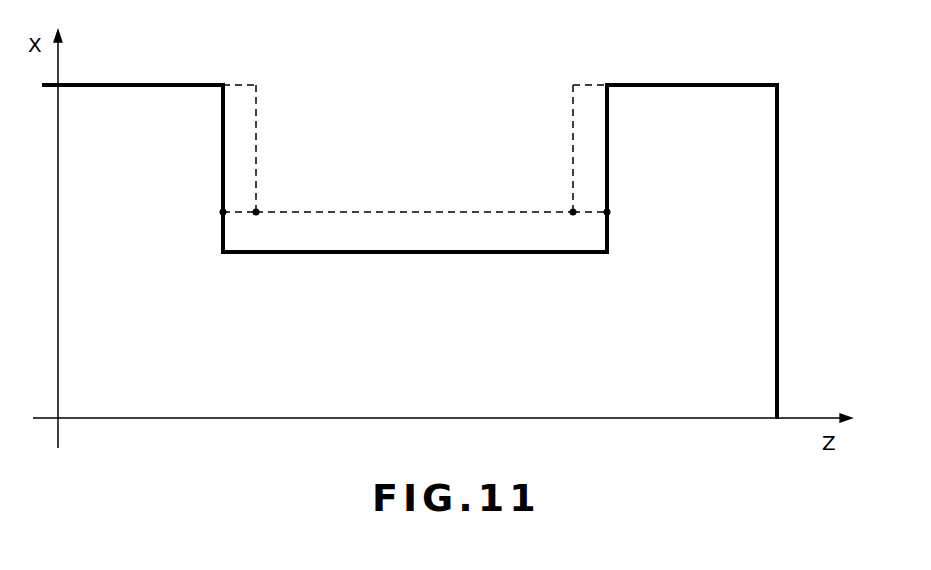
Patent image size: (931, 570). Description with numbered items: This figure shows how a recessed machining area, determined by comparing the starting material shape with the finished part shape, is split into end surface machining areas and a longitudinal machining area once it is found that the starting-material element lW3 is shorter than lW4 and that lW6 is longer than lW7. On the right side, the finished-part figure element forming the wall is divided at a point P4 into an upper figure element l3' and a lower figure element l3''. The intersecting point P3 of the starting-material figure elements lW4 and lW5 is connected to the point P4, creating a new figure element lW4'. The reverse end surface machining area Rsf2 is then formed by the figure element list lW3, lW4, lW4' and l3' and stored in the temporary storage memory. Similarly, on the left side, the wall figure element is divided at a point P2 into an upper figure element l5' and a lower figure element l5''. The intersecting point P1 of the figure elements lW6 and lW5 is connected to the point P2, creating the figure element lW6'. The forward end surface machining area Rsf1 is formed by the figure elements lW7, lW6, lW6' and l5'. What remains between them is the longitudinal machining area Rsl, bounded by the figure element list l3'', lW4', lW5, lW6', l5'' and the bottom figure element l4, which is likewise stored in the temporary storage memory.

The figure element l5' is at (206, 147).
The figure element l5'' is at (204, 233).
The figure element l4 is at (415, 269).
The figure element l3' is at (622, 147).
The figure element l3'' is at (624, 233).
The figure element lW7 is at (241, 72).
The figure element lW6 is at (276, 148).
The figure element lW6' is at (245, 229).
The figure element lW5 is at (414, 201).
The figure element lW4 is at (551, 148).
The figure element lW4' is at (585, 229).
The figure element lW3 is at (592, 72).
The forward end surface machining area Rsf1 is at (240, 110).
The reverse end surface machining area Rsf2 is at (590, 112).
The longitudinal machining area Rsl is at (482, 242).
The intersecting point P1 is at (267, 202).
The point P2 is at (206, 202).
The intersecting point P3 is at (558, 202).
The point P4 is at (618, 202).